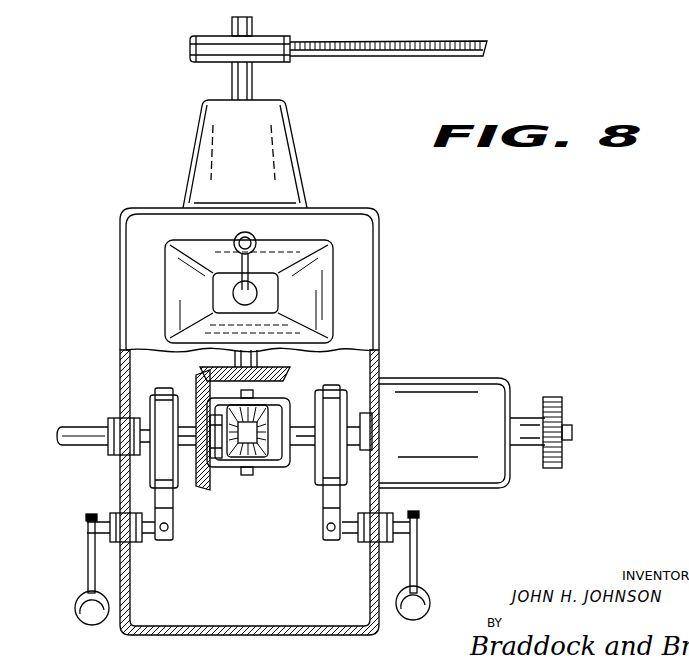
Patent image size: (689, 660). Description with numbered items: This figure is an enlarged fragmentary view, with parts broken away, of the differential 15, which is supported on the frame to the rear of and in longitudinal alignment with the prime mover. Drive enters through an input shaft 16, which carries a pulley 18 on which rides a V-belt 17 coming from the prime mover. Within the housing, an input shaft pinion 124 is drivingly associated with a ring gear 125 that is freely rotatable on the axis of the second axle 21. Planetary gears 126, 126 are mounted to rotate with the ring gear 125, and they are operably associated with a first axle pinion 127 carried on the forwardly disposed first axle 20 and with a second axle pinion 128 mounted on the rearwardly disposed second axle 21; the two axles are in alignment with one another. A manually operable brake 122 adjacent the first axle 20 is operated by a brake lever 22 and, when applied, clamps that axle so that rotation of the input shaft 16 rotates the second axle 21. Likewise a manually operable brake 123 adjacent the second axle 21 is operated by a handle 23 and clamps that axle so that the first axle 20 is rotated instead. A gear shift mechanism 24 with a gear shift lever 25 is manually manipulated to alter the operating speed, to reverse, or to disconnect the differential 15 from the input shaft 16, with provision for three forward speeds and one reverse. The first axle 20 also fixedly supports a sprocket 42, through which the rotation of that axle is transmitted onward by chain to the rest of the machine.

The differential 15 is at (249, 367).
The input shaft 16 is at (232, 80).
The V-belt 17 is at (383, 42).
The pulley 18 is at (280, 36).
The first axle 20 is at (573, 432).
The second axle 21 is at (75, 430).
The brake lever 22 is at (418, 570).
The handle 23 is at (88, 573).
The gear shift mechanism 24 is at (165, 288).
The gear shift lever 25 is at (256, 240).
The sprocket 42 is at (563, 406).
The manually operable brake 122 is at (323, 368).
The manually operable brake 123 is at (152, 493).
The input shaft pinion 124 is at (206, 366).
The ring gear 125 is at (195, 386).
The planetary gears 126 is at (262, 404).
The first axle pinion 127 is at (290, 466).
The second axle pinion 128 is at (212, 488).